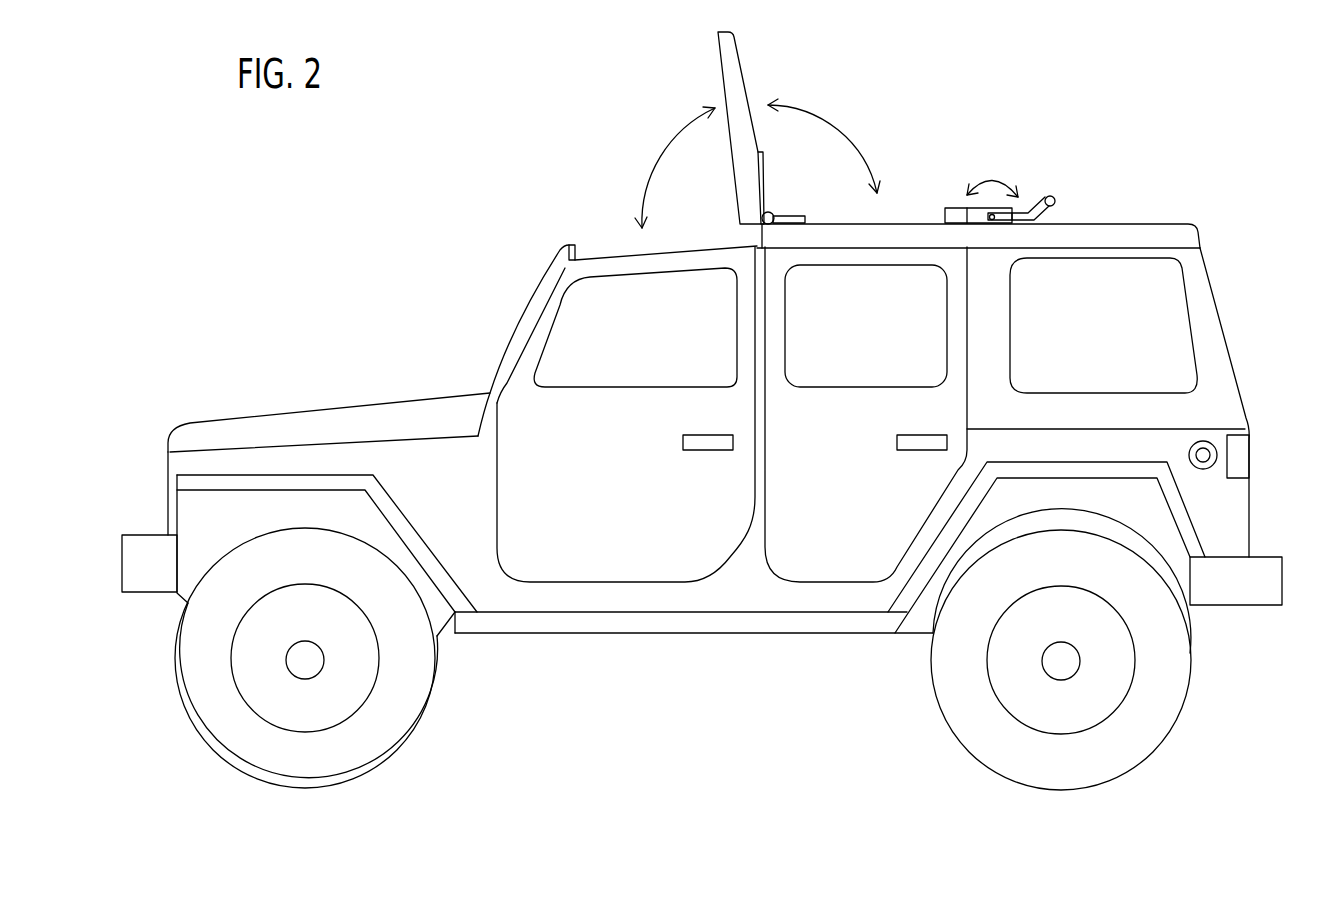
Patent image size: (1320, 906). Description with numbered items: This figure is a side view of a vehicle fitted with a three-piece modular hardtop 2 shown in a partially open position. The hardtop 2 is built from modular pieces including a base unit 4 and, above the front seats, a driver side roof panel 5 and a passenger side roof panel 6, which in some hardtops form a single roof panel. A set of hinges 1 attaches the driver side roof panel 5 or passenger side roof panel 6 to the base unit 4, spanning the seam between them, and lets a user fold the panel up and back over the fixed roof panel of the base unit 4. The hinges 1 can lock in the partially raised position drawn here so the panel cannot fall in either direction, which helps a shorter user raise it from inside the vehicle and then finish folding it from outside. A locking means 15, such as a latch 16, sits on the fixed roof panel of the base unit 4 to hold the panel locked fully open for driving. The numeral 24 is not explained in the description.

The hinge 1 is at (787, 217).
The hardtop 2 is at (1110, 223).
The base unit 4 is at (1165, 247).
The driver side roof panel 5 is at (738, 52).
The passenger side roof panel 6 is at (757, 130).
The locking means 15 is at (1028, 210).
The latch 16 is at (1024, 190).
The roof rack 24 is at (878, 223).